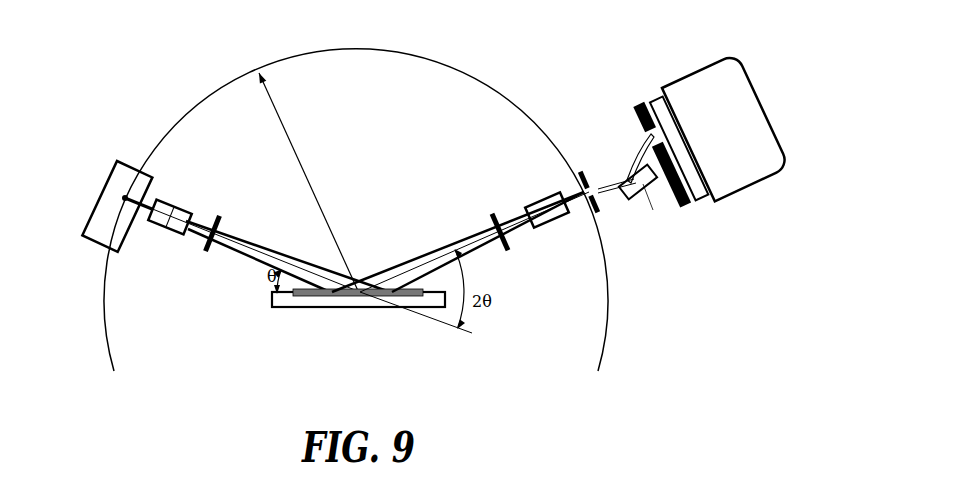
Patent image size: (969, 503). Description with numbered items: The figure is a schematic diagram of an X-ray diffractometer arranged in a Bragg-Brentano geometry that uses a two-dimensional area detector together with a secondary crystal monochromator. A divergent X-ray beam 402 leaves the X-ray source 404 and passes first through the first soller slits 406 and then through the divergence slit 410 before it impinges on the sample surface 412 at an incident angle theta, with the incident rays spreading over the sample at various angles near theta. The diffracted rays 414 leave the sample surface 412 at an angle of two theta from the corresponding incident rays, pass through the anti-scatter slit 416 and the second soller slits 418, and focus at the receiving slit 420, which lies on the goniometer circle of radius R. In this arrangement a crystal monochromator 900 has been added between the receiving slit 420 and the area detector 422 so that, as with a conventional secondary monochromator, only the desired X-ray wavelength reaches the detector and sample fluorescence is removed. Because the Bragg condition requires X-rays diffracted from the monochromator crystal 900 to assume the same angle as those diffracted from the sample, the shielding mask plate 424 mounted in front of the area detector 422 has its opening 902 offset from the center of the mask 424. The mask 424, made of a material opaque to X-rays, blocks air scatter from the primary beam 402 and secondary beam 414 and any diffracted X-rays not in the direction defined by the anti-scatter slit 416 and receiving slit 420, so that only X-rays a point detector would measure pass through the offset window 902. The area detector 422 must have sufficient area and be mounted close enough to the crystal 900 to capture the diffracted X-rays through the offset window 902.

The divergent X-ray beam 402 is at (250, 255).
The X-ray source 404 is at (113, 198).
The soller slits 1 406 is at (162, 225).
The divergence slit 410 is at (222, 215).
The sample surface 412 is at (311, 307).
The diffracted rays 414 is at (388, 265).
The anti-scatter slit 416 is at (493, 213).
The soller slits 2 418 is at (540, 215).
The receiving slit 420 is at (579, 172).
The area detector 422 is at (715, 83).
The shielding mask plate 424 is at (633, 104).
The crystal monochromator 900 is at (702, 184).
The offset window 902 is at (652, 135).